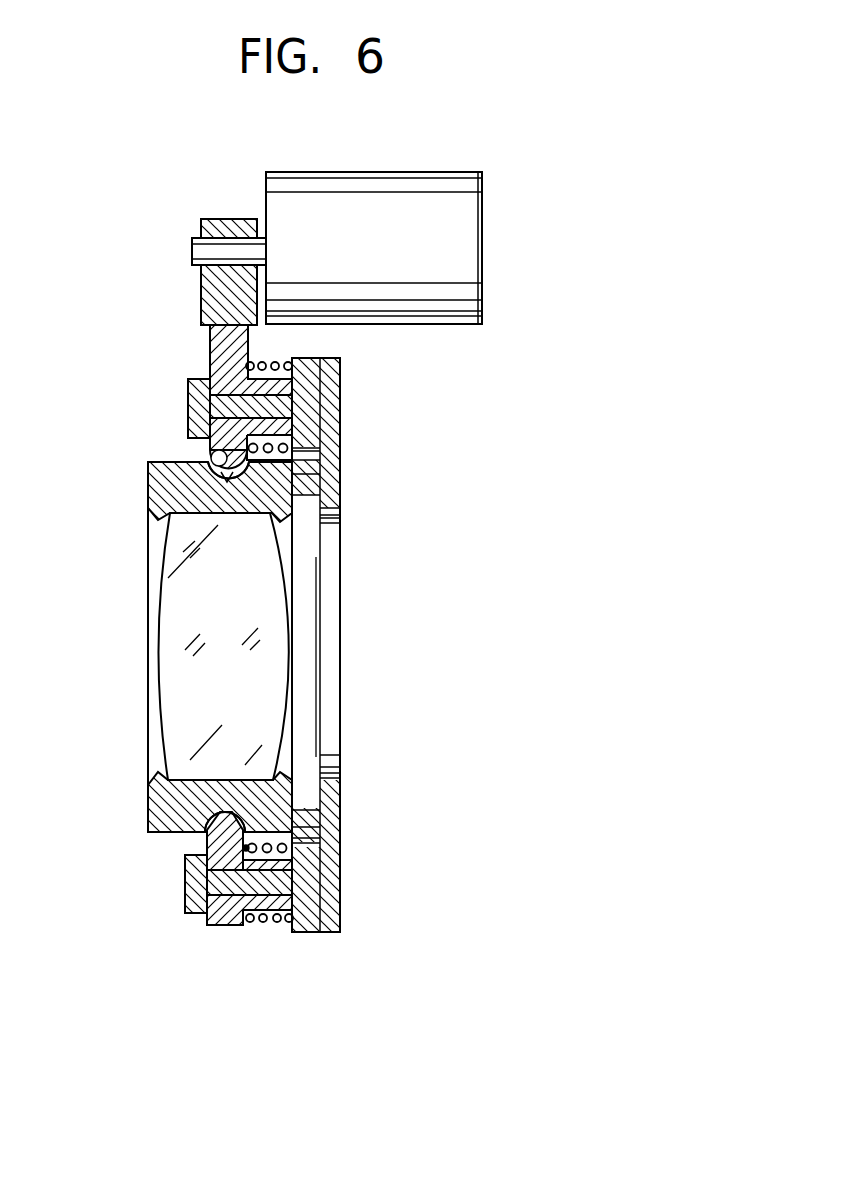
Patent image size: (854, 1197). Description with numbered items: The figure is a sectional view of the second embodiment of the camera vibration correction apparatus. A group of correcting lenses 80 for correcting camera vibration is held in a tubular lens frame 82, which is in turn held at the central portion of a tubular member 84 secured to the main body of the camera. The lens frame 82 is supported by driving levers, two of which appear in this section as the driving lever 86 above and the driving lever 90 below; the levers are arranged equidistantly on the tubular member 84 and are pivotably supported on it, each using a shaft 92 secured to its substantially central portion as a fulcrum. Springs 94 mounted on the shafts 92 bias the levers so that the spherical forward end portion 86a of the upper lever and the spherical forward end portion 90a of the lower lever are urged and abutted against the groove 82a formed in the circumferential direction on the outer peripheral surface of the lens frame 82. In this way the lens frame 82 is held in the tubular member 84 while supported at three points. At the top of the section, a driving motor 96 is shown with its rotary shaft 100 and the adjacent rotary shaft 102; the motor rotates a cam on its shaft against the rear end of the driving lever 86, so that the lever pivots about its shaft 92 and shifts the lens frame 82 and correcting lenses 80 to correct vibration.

The correcting lenses 80 is at (182, 672).
The lens frame 82 is at (167, 513).
The groove 82a is at (217, 470).
The tubular member 84 is at (340, 400).
The driving lever 86 is at (215, 357).
The spherical forward end portion 86a is at (215, 452).
The driving lever 90 is at (212, 927).
The spherical forward end portion 90a is at (207, 837).
The shaft 92 is at (197, 403).
The spring 94 is at (280, 360).
The driving motor 96 is at (463, 260).
The rotary shaft 100 is at (190, 245).
The rotary shaft 102 is at (205, 290).